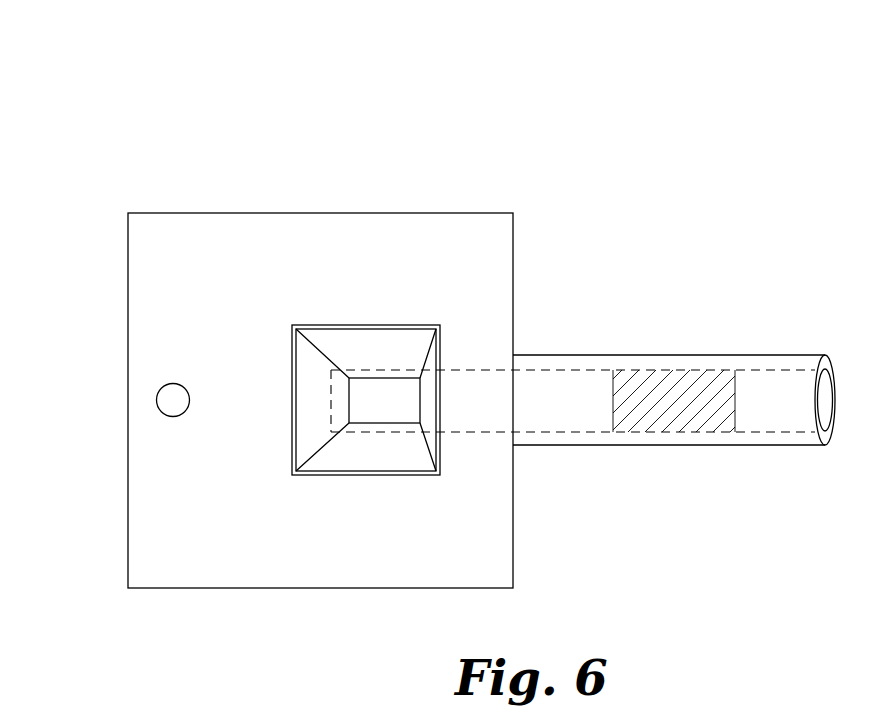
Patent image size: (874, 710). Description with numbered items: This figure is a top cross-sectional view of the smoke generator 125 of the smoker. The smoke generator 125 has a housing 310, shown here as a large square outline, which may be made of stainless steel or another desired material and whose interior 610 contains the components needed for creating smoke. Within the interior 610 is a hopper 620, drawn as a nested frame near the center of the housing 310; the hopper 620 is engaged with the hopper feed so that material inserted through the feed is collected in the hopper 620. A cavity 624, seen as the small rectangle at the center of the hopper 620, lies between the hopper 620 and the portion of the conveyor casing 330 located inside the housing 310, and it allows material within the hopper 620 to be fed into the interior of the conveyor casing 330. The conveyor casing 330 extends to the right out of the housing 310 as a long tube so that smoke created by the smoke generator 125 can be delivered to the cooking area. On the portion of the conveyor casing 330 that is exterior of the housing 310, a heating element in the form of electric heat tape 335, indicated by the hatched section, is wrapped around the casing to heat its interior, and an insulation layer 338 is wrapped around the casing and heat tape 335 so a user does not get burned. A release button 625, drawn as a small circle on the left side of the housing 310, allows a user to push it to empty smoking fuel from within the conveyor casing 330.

The smoke generator 125 is at (160, 173).
The housing 310 is at (322, 240).
The interior 610 is at (309, 374).
The hopper 620 is at (407, 350).
The cavity 624 is at (378, 383).
The release button 625 is at (173, 400).
The conveyor casing 330 is at (795, 388).
The insulation layer 338 is at (700, 363).
The electric heat tape 335 is at (690, 425).